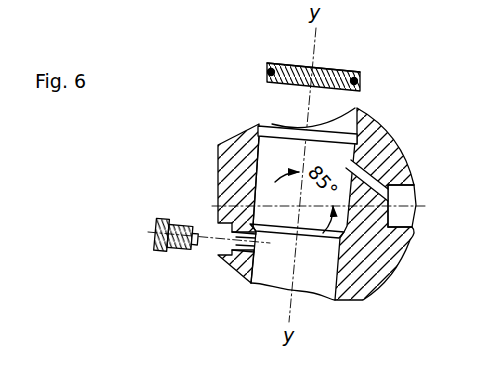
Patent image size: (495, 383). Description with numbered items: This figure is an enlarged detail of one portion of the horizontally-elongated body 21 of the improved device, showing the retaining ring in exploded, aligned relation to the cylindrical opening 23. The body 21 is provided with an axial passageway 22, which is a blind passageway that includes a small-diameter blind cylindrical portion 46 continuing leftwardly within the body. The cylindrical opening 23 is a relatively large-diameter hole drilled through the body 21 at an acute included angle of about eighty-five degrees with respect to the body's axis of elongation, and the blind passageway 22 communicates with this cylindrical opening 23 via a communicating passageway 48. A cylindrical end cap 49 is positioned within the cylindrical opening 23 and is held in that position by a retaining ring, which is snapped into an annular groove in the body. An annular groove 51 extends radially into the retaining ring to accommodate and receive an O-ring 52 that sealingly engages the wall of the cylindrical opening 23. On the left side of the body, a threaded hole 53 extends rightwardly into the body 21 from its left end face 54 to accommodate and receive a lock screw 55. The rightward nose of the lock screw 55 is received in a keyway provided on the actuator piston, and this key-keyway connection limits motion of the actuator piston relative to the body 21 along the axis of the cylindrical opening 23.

The body 21 is at (397, 273).
The axial passageway 22 is at (415, 199).
The cylindrical opening 23 is at (253, 100).
The small-diameter blind cylindrical portion 46 is at (398, 225).
The communicating passageway 48 is at (366, 172).
The cylindrical end cap 49 is at (328, 61).
The annular groove 51 is at (297, 62).
The O-ring 52 is at (262, 75).
The threaded hole 53 is at (227, 254).
The left end face 54 is at (215, 181).
The lock screw 55 is at (152, 244).